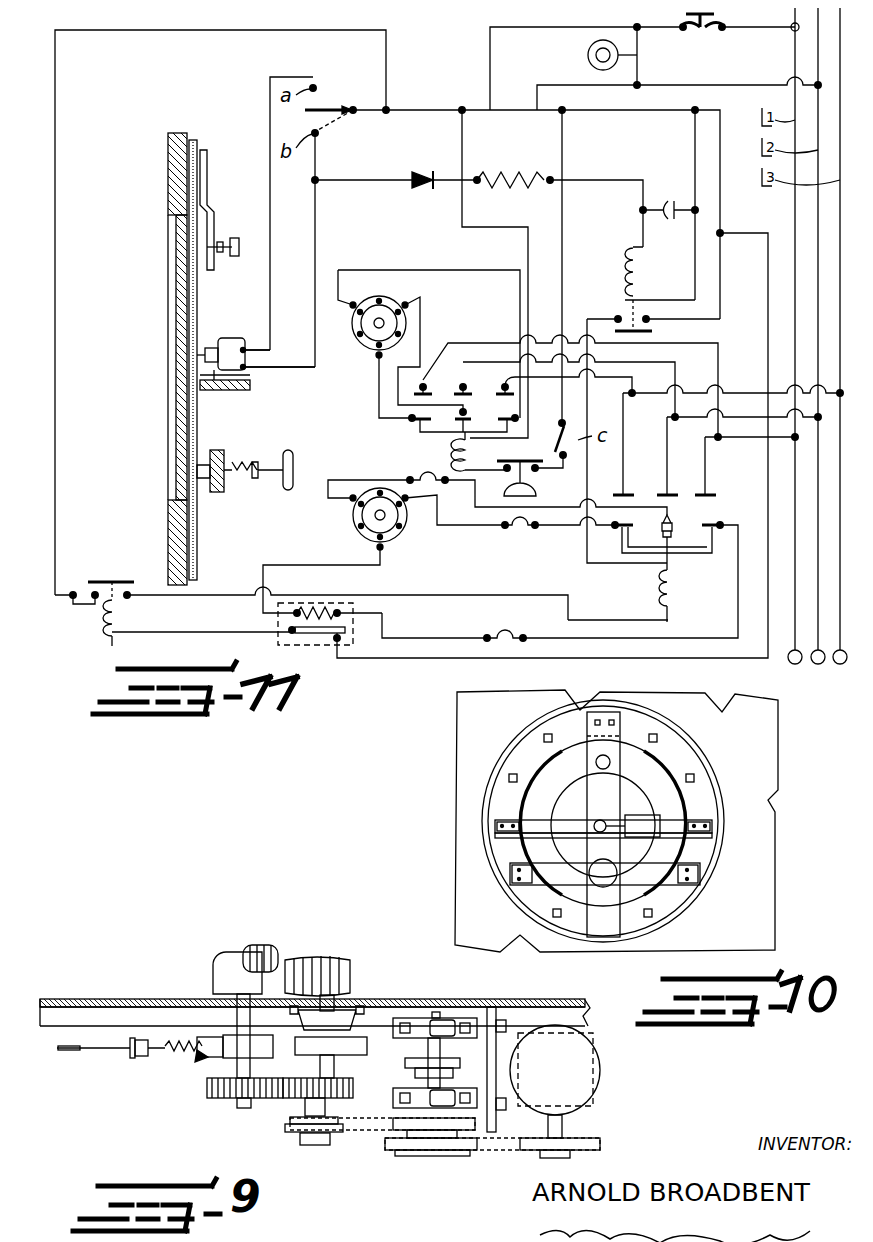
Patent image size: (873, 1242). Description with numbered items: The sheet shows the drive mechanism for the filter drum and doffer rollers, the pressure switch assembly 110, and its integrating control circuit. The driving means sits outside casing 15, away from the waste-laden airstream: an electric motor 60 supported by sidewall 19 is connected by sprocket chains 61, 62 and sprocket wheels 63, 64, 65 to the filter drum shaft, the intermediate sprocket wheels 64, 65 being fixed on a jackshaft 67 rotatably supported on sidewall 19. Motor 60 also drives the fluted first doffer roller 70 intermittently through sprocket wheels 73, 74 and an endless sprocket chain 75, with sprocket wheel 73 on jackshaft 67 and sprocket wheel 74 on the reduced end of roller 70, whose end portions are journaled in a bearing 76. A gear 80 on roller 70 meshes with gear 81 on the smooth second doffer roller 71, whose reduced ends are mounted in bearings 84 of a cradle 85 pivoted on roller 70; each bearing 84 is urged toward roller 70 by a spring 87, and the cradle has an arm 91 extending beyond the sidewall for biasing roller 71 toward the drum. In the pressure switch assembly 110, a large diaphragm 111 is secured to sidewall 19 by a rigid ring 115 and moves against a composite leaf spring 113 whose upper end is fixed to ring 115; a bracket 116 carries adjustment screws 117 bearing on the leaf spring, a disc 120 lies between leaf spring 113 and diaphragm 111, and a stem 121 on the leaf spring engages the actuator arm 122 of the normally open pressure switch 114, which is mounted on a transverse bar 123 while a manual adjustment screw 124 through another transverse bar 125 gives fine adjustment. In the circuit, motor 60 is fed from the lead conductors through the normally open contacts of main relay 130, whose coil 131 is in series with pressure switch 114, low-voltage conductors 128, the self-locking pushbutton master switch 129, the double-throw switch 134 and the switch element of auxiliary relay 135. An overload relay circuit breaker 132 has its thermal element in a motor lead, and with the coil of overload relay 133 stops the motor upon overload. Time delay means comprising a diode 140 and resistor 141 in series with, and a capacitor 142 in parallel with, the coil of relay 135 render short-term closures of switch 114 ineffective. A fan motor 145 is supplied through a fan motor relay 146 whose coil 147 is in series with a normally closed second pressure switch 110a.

In FIG. 10, the casing 15 is at (446, 763).
In FIG. 11, the casing sidewall 19 is at (167, 169).
In FIG. 9, the casing sidewall 19 is at (94, 998).
In FIG. 11, the electric motor 60 is at (352, 541).
In FIG. 9, the electric motor 60 is at (555, 1070).
In FIG. 9, the sprocket chain 61 is at (492, 1150).
In FIG. 9, the sprocket chain 62 is at (390, 1060).
In FIG. 9, the sprocket wheel 63 is at (574, 1134).
In FIG. 9, the intermediate sprocket wheel 64 is at (440, 1156).
In FIG. 9, the intermediate sprocket wheel 65 is at (444, 1048).
In FIG. 9, the jackshaft 67 is at (432, 1028).
In FIG. 9, the first doffer roller 70 is at (334, 956).
In FIG. 9, the second doffer roller 71 is at (252, 952).
In FIG. 9, the sprocket wheel 73 is at (390, 1136).
In FIG. 9, the sprocket wheel 74 is at (295, 1138).
In FIG. 9, the endless sprocket chain 75 is at (345, 1134).
In FIG. 9, the bearing 76 is at (336, 1007).
In FIG. 9, the gear 80 is at (288, 1108).
In FIG. 9, the gear 81 is at (206, 1100).
In FIG. 9, the bearing 84 is at (207, 1061).
In FIG. 9, the cradle 85 is at (188, 1060).
In FIG. 9, the spring 87 is at (176, 1040).
In FIG. 9, the arm 91 is at (84, 1049).
In FIG. 11, the pressure switch assembly 110 is at (160, 339).
In FIG. 10, the pressure switch assembly 110 is at (735, 805).
In FIG. 11, the second pressure switch 110a is at (508, 498).
In FIG. 11, the diaphragm 111 is at (172, 472).
In FIG. 10, the diaphragm 111 is at (495, 812).
In FIG. 10, the composite leaf spring 113 is at (616, 920).
In FIG. 11, the electrical pressure switch 114 is at (242, 338).
In FIG. 10, the electrical pressure switch 114 is at (656, 826).
In FIG. 10, the rigid ring 115 is at (526, 742).
In FIG. 11, the bracket 116 is at (206, 180).
In FIG. 10, the bracket 116 is at (611, 746).
In FIG. 11, the adjustment screws 117 is at (232, 240).
In FIG. 10, the adjustment screws 117 is at (610, 761).
In FIG. 11, the disc 120 is at (188, 309).
In FIG. 10, the disc 120 is at (641, 802).
In FIG. 11, the stem 121 is at (205, 358).
In FIG. 11, the actuator arm 122 is at (246, 375).
In FIG. 10, the actuator arm 122 is at (577, 822).
In FIG. 11, the transverse bar 123 is at (238, 396).
In FIG. 10, the transverse bar 123 is at (523, 852).
In FIG. 11, the adjustment screw 124 is at (274, 472).
In FIG. 10, the adjustment screw 124 is at (590, 886).
In FIG. 11, the transverse bar 125 is at (220, 492).
In FIG. 10, the transverse bar 125 is at (670, 878).
In FIG. 11, the low-voltage conductors 128 is at (556, 85).
In FIG. 11, the self-locking pushbutton master switch 129 is at (706, 28).
In FIG. 11, the main relay 130 is at (685, 506).
In FIG. 11, the main relay coil 131 is at (672, 594).
In FIG. 11, the overload relay circuit breaker 132 is at (353, 603).
In FIG. 11, the overload relay 133 is at (128, 602).
In FIG. 11, the double-throw switch 134 is at (326, 70).
In FIG. 11, the auxiliary relay 135 is at (655, 331).
In FIG. 11, the diode 140 is at (430, 150).
In FIG. 11, the resistor 141 is at (532, 172).
In FIG. 11, the capacitor 142 is at (670, 196).
In FIG. 11, the electric motor 145 is at (364, 358).
In FIG. 11, the fan motor relay 146 is at (409, 436).
In FIG. 11, the relay coil 147 is at (456, 458).